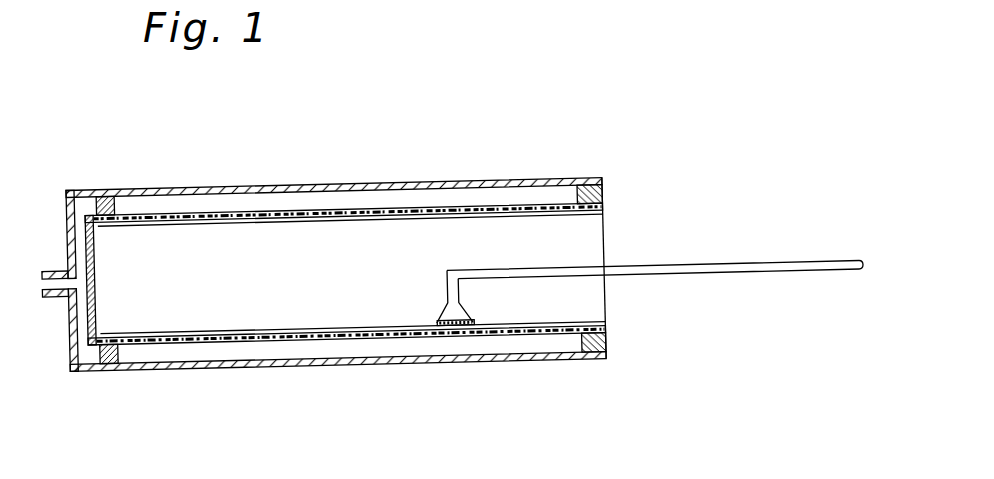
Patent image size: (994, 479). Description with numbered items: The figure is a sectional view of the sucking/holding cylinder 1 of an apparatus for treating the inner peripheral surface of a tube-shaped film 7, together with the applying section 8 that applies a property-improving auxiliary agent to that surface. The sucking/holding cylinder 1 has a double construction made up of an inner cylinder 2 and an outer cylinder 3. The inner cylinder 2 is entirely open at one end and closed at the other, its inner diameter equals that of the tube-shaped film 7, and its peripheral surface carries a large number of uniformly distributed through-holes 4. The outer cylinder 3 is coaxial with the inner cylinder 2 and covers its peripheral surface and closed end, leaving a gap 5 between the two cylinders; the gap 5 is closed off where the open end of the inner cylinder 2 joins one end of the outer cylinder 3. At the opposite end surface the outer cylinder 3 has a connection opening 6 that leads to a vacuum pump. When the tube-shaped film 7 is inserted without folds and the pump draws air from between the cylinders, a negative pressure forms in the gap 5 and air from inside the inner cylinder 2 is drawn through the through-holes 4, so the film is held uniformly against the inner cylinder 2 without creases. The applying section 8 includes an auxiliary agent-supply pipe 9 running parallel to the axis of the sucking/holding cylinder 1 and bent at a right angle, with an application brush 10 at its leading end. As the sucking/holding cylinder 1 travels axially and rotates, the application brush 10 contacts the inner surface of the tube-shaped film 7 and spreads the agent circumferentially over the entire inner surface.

The sucking/holding cylinder 1 is at (473, 146).
The inner cylinder 2 is at (326, 211).
The outer cylinder 3 is at (232, 187).
The through-holes 4 is at (276, 217).
The gap 5 is at (153, 208).
The connection opening 6 is at (55, 268).
The tube-shaped film 7 is at (182, 225).
The applying section 8 is at (650, 261).
The auxiliary agent-supply pipe 9 is at (737, 272).
The application brush 10 is at (470, 323).